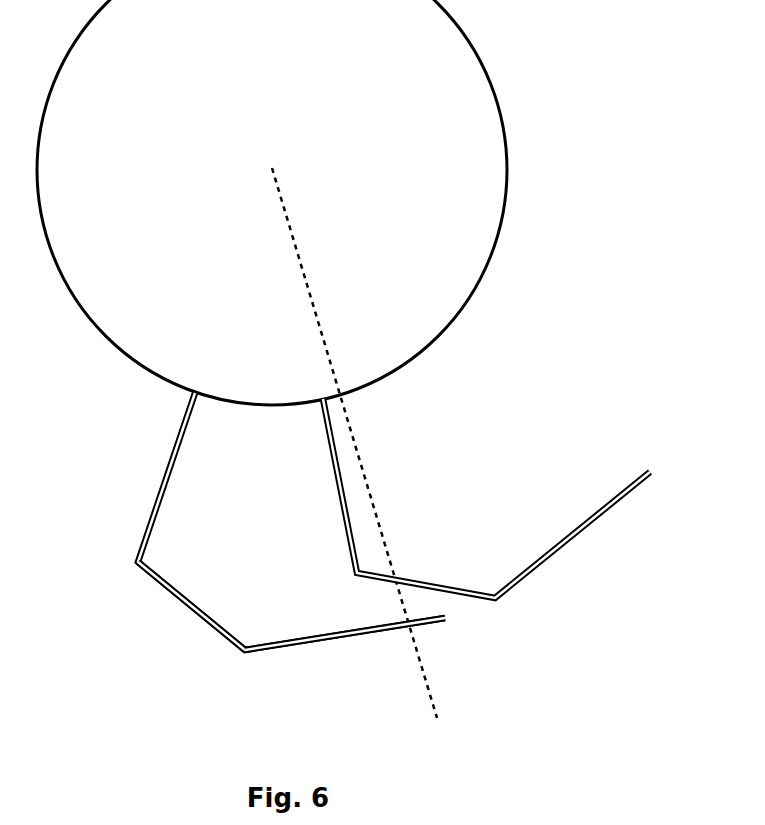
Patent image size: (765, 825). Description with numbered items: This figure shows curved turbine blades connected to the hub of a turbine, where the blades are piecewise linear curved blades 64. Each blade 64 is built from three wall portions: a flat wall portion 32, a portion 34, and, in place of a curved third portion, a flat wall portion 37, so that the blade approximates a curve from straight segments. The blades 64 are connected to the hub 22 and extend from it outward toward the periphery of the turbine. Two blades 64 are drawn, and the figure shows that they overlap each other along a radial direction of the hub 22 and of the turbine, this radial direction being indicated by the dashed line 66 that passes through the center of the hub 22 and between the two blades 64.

The hub 22 is at (272, 202).
The portion 32 is at (168, 470).
The portion 34 is at (205, 612).
The flat wall portion 37 is at (325, 635).
The piecewise linear curved blades 64 is at (172, 590).
The dashed line 66 is at (367, 485).